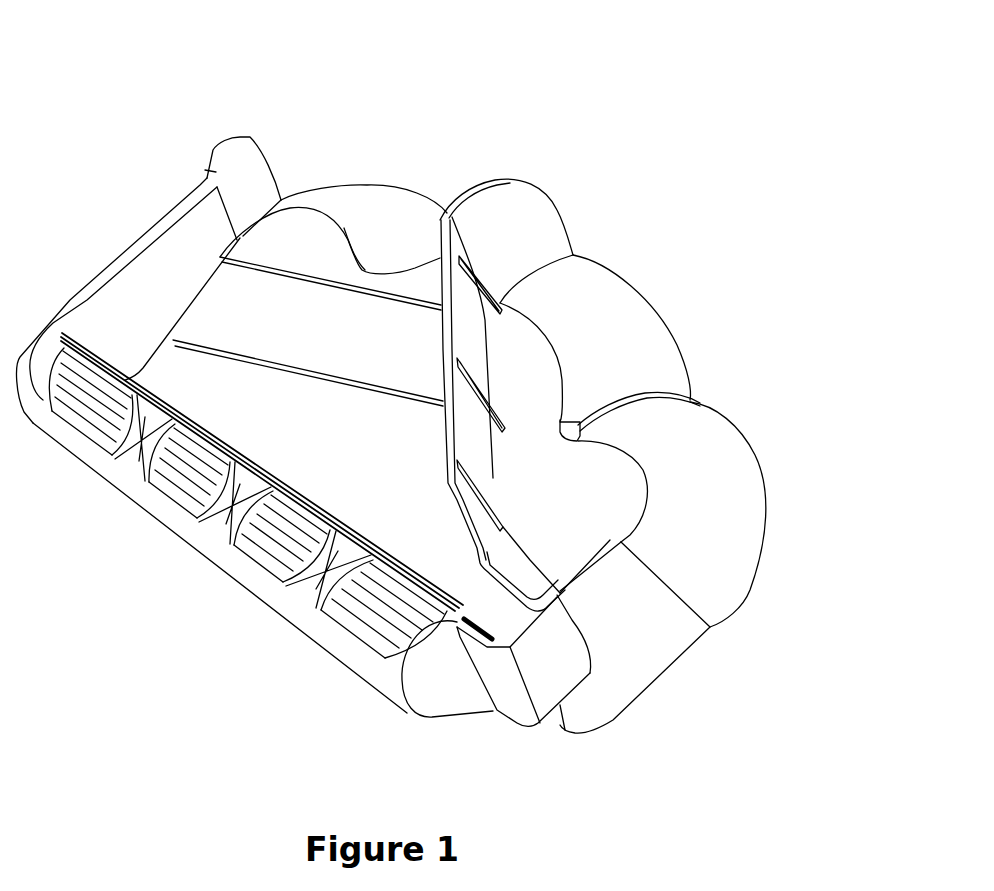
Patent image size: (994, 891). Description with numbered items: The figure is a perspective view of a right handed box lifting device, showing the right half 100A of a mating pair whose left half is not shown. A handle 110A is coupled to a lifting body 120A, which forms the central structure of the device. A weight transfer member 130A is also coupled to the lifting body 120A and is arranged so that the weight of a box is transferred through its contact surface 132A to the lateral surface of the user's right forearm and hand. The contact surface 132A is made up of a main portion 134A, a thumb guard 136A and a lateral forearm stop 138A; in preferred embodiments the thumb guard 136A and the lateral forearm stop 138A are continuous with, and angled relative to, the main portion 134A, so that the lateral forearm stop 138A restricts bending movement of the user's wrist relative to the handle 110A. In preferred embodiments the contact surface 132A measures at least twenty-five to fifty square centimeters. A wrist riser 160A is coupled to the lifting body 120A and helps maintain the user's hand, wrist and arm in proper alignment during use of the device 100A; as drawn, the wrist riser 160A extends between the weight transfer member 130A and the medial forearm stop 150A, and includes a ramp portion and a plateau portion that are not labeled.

The right half 100A is at (449, 109).
The handle 110A is at (192, 540).
The lifting body 120A is at (737, 497).
The weight transfer member 130A is at (470, 347).
The contact surface 132A is at (443, 405).
The main portion 134A is at (468, 440).
The thumb guard 136A is at (560, 593).
The lateral forearm stop 138A is at (500, 212).
The medial forearm stop 150A is at (238, 165).
The wrist riser 160A is at (283, 257).